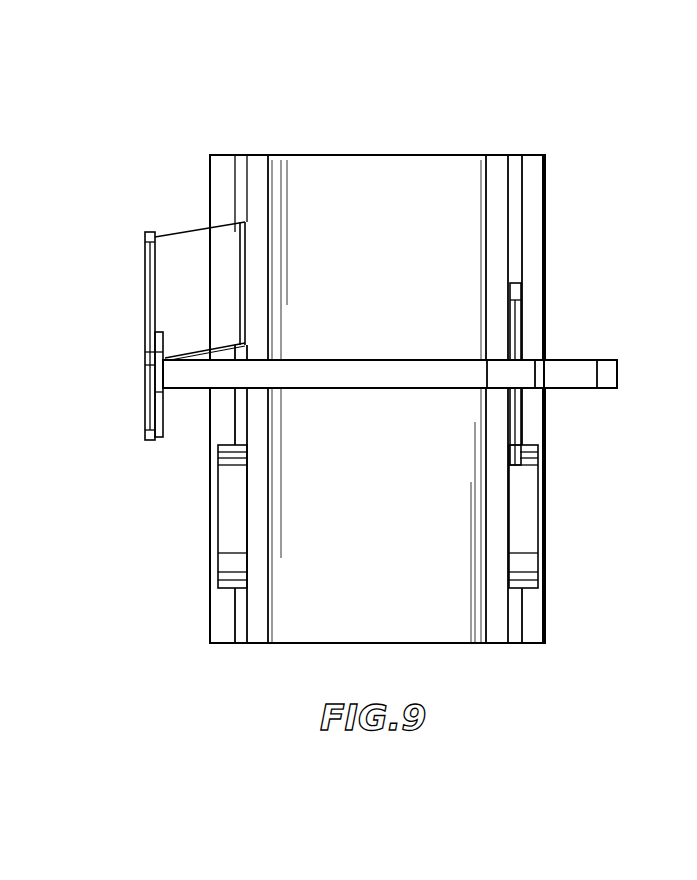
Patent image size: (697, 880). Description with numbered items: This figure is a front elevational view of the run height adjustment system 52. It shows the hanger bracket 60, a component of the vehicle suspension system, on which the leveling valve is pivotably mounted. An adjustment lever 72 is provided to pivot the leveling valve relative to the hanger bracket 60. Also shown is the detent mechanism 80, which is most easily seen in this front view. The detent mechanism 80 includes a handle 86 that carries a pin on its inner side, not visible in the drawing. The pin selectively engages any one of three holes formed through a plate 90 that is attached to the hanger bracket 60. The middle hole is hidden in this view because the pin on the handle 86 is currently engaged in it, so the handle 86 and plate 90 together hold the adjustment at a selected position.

The roller assembly 52 is at (415, 345).
The hanger bracket 60 is at (343, 155).
The adjustment lever 72 is at (165, 342).
The detent mechanism 80 is at (532, 337).
The handle 86 is at (618, 368).
The plate 90 is at (507, 330).